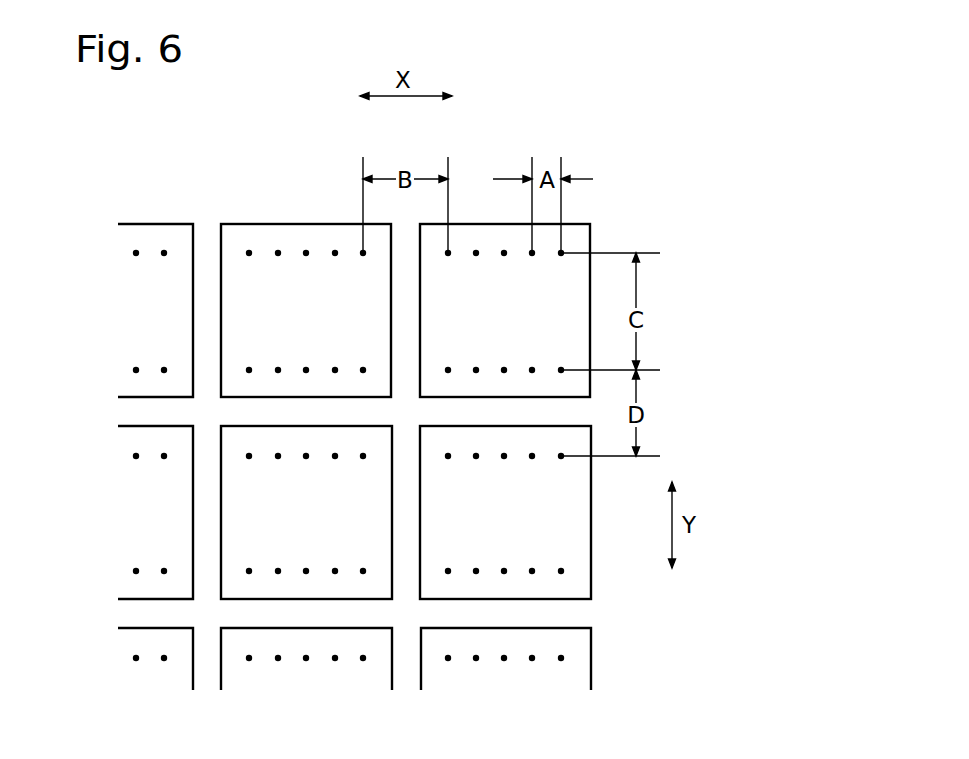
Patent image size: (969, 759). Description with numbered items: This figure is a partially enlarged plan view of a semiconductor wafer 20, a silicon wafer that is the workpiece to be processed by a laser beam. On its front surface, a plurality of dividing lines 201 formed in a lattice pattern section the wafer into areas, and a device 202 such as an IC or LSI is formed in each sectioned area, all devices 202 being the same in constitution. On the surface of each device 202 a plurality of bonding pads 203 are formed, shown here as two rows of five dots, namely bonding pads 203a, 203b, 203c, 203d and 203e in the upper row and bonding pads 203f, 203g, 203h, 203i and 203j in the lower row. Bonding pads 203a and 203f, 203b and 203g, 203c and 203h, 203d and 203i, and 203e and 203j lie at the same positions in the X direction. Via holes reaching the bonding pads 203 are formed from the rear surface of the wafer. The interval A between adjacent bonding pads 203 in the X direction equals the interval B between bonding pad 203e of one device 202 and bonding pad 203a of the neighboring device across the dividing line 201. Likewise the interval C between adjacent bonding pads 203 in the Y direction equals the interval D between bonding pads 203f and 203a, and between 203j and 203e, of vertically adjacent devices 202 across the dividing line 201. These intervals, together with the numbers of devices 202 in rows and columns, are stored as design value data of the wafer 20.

The semiconductor wafer 20 is at (604, 162).
The dividing lines 201 is at (148, 408).
The device 202 is at (132, 322).
The bonding pads 203 is at (168, 132).
The bonding pad 203a is at (164, 250).
The bonding pad 203b is at (334, 251).
The bonding pad 203c is at (305, 252).
The bonding pad 203d is at (276, 252).
The bonding pad 203e is at (247, 253).
The bonding pad 203f is at (363, 370).
The bonding pad 203g is at (335, 370).
The bonding pad 203h is at (306, 370).
The bonding pad 203i is at (278, 370).
The bonding pad 203j is at (249, 370).